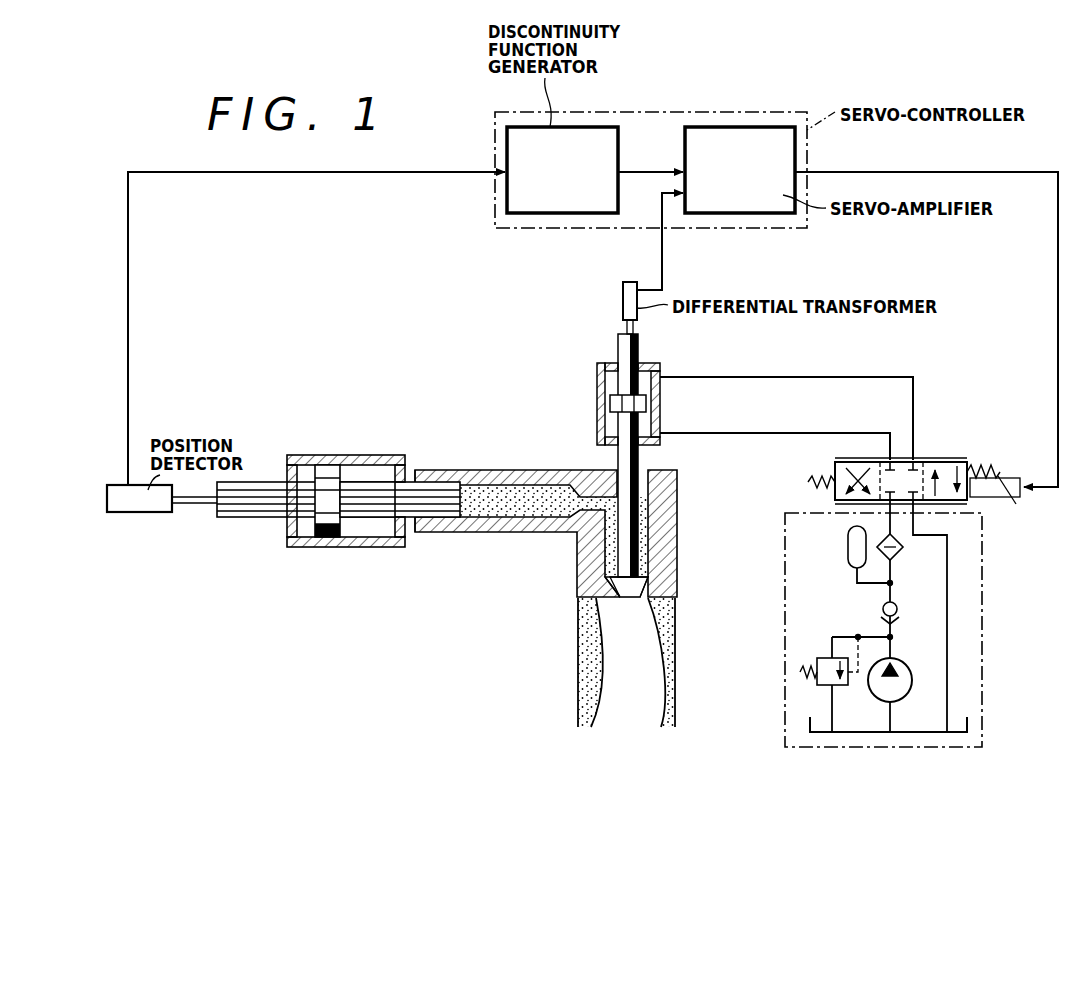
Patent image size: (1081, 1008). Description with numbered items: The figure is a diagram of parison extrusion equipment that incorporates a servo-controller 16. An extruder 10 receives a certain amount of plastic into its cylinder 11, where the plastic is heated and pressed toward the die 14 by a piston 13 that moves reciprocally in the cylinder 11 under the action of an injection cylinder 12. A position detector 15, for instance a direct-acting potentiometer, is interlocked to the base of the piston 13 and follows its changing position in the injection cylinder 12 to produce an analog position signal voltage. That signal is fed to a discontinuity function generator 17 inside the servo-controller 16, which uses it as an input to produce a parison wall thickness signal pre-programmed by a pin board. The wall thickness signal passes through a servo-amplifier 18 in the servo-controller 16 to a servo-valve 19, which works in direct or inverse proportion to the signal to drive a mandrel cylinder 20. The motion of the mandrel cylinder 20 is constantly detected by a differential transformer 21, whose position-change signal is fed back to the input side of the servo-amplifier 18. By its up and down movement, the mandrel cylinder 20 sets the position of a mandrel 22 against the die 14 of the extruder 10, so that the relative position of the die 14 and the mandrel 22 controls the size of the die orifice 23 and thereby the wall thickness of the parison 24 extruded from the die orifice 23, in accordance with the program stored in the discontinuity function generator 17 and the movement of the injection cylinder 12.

The extruder 10 is at (514, 603).
The cylinder 11 is at (500, 470).
The injection cylinder 12 is at (345, 455).
The piston 13 is at (435, 507).
The die 14 is at (677, 563).
The position detector 15 is at (130, 505).
The servo-controller 16 is at (629, 112).
The discontinuity function generator 17 is at (569, 185).
The servo-amplifier 18 is at (751, 185).
The servo-valve 19 is at (953, 462).
The mandrel cylinder 20 is at (660, 370).
The differential transformer 21 is at (624, 298).
The mandrel 22 is at (622, 598).
The die orifice 23 is at (582, 603).
The parison 24 is at (666, 687).